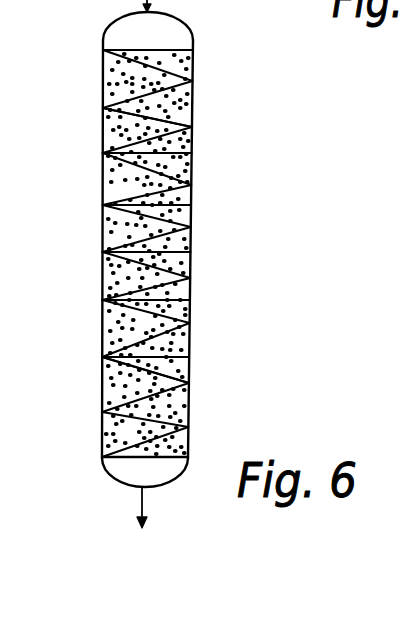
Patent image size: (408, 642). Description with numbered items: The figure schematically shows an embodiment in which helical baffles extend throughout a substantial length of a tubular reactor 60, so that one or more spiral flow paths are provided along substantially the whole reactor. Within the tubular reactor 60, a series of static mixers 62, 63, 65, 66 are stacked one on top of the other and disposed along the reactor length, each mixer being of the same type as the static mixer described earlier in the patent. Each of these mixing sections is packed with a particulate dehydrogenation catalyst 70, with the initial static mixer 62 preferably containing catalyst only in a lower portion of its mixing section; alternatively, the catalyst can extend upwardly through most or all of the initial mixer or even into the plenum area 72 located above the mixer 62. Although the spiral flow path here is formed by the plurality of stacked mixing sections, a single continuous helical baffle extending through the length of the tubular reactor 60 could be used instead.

The tubular reactor 60 is at (98, 230).
The static mixer 62 is at (192, 123).
The static mixer 63 is at (192, 185).
The static mixer 65 is at (190, 314).
The static mixer 66 is at (189, 410).
The particulate dehydrogenation catalyst 70 is at (103, 122).
The plenum area 72 is at (167, 33).